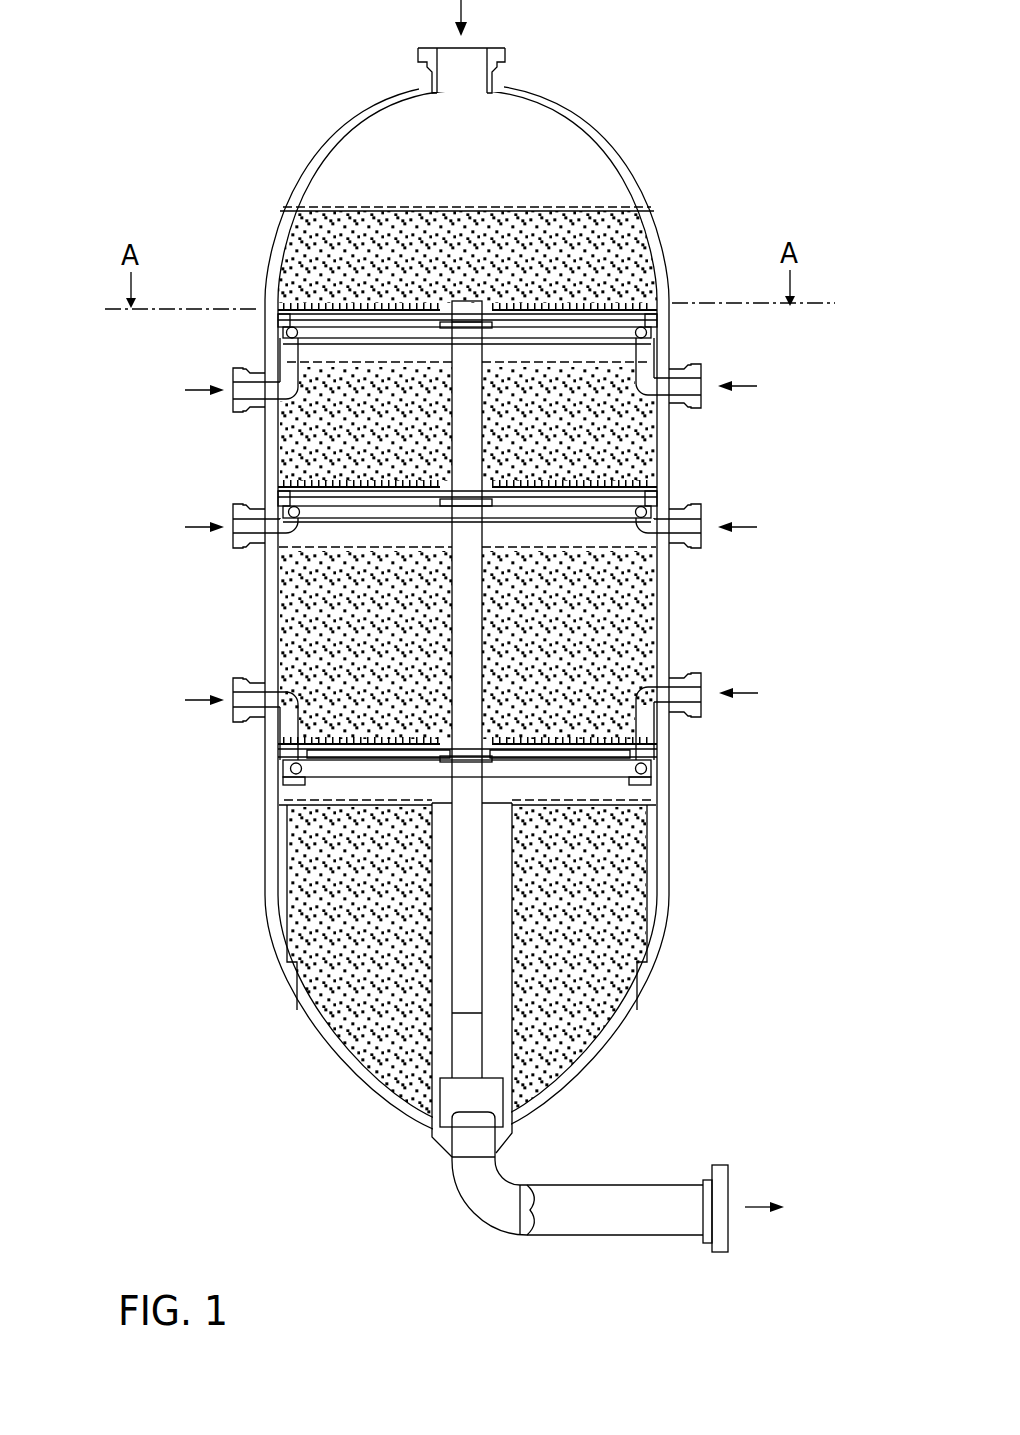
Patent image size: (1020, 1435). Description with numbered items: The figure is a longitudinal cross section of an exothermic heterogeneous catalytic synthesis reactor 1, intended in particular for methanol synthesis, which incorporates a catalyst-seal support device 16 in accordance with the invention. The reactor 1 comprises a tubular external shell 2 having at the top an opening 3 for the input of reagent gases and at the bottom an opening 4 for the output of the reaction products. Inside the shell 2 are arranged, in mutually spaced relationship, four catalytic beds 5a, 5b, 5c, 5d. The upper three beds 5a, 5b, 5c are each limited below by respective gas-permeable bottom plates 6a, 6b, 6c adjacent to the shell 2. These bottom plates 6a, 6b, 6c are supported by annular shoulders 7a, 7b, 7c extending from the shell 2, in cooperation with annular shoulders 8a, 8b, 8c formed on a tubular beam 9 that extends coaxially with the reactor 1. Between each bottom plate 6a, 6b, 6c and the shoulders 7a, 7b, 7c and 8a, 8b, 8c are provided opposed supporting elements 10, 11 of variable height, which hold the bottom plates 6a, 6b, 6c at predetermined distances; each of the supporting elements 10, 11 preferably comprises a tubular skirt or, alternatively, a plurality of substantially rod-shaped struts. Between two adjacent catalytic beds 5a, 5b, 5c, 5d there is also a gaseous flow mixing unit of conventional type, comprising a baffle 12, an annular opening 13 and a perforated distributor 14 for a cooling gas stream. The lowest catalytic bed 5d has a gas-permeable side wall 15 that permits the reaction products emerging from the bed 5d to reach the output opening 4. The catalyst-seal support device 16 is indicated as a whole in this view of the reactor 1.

The exothermic heterogeneous catalytic synthesis reactor 1 is at (156, 183).
The tubular external shell 2 is at (668, 920).
The opening 3 is at (498, 80).
The opening 4 is at (439, 1140).
The catalytic bed 5a is at (303, 225).
The catalytic bed 5b is at (633, 430).
The catalytic bed 5c is at (285, 597).
The catalytic bed 5d is at (300, 905).
The gas-permeable bottom plate 6a is at (313, 307).
The gas-permeable bottom plate 6b is at (297, 483).
The gas-permeable bottom plate 6c is at (303, 735).
The annular shoulder 7a is at (657, 447).
The annular shoulder 7b is at (655, 575).
The annular shoulder 7c is at (658, 750).
The annular shoulder 8a is at (462, 322).
The annular shoulder 8b is at (450, 507).
The annular shoulder 8c is at (452, 776).
The tubular beam 9 is at (463, 963).
The supporting element 10 is at (278, 353).
The supporting element 11 is at (503, 316).
The baffle 12 is at (637, 313).
The annular opening 13 is at (278, 323).
The perforated distributor 14 is at (642, 388).
The gas-permeable side wall 15 is at (513, 1023).
The catalyst-seal support device 16 is at (277, 316).